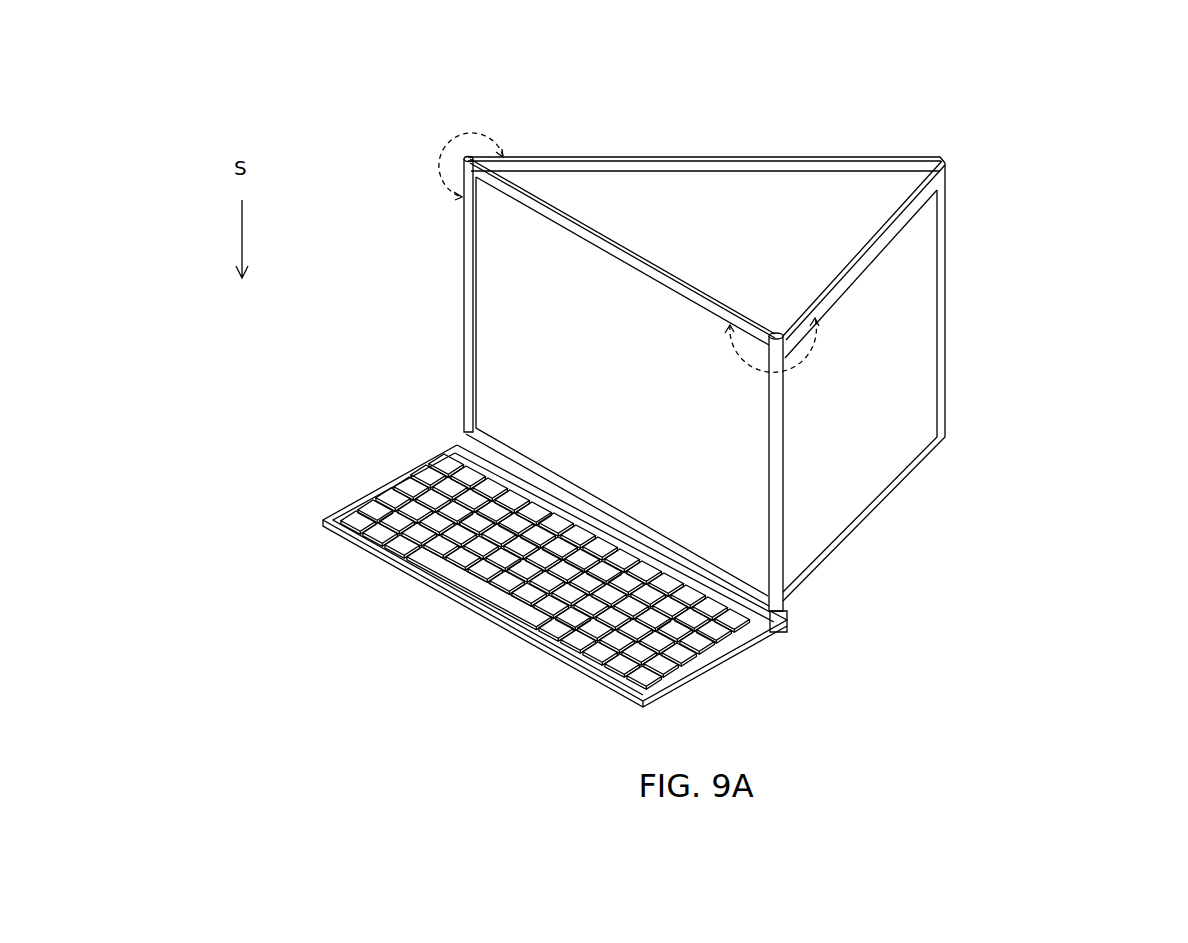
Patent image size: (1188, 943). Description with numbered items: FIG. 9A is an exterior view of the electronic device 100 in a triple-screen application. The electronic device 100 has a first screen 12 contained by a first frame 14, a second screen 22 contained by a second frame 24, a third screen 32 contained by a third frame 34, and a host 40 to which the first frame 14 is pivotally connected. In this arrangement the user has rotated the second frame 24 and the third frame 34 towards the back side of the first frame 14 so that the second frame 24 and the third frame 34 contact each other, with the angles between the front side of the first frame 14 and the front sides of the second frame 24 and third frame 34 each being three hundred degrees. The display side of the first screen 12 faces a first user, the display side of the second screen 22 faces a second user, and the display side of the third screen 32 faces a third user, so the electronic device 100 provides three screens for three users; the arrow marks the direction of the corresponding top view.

The electronic device 100 is at (1032, 130).
The first screen 12 is at (497, 356).
The first frame 14 is at (463, 277).
The second screen 22 is at (945, 298).
The second frame 24 is at (927, 345).
The third screen 32 is at (766, 188).
The third frame 34 is at (708, 156).
The host 40 is at (730, 660).